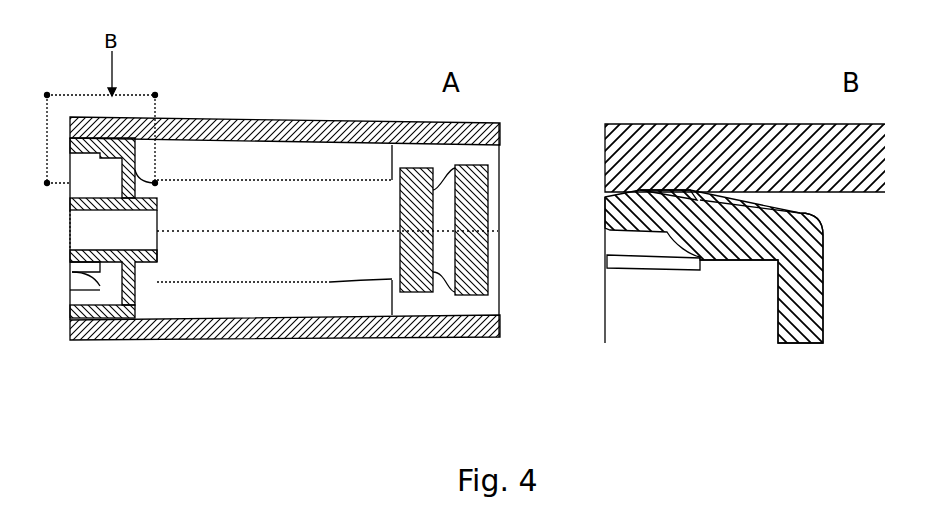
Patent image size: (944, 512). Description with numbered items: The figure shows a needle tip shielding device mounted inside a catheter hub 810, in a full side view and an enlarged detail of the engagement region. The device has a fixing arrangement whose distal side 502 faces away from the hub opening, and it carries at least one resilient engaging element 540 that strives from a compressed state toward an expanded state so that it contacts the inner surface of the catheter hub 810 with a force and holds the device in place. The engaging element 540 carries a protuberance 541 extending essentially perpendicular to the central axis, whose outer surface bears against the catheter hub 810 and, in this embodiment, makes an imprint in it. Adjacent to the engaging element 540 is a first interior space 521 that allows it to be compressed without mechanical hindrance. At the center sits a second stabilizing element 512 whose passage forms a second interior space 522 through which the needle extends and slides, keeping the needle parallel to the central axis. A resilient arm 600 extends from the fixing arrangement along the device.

In FIG. 4A, the engaging element 540 is at (68, 146).
In FIG. 4B, the engaging element 540 is at (598, 216).
In FIG. 4B, the protuberance 541 is at (662, 192).
In FIG. 4A, the catheter hub 810 is at (287, 121).
In FIG. 4B, the catheter hub 810 is at (770, 147).
In FIG. 4A, the resilient arm 600 is at (362, 192).
In FIG. 4A, the first interior space 521 is at (108, 288).
In FIG. 4B, the first interior space 521 is at (665, 288).
In FIG. 4A, the second interior space 522 is at (127, 233).
In FIG. 4A, the second stabilizing element 512 is at (98, 262).
In FIG. 4B, the distal side 502 is at (826, 248).